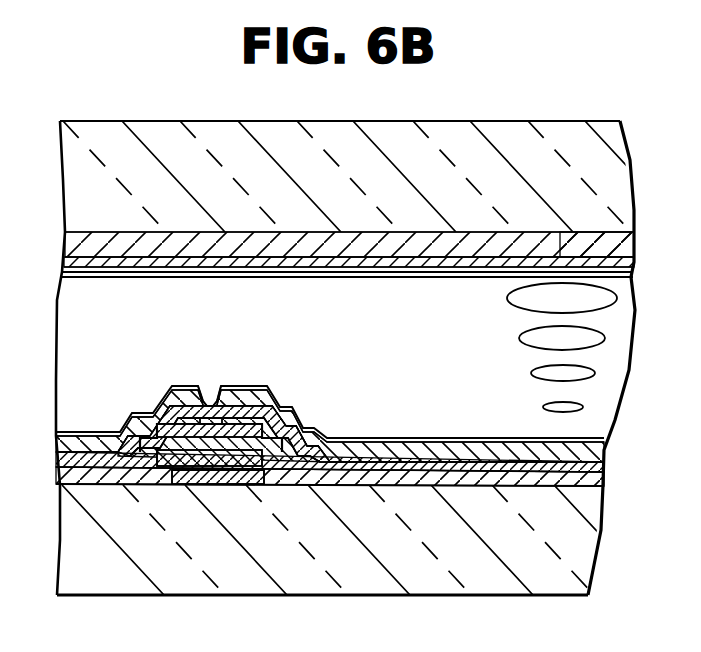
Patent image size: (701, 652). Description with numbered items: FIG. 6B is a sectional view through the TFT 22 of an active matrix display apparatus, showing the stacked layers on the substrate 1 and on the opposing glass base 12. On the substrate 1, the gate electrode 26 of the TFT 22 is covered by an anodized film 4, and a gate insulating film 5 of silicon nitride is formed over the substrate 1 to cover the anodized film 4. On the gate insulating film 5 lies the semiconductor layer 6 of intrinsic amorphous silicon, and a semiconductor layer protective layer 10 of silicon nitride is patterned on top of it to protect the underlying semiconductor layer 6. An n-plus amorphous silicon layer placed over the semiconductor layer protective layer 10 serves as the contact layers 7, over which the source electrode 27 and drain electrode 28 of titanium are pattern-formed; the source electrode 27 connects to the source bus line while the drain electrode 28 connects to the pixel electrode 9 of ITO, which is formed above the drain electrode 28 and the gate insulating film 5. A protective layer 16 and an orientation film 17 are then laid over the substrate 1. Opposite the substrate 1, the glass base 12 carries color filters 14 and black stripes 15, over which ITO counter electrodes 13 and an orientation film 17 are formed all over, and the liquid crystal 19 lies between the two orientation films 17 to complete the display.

The substrate 1 is at (187, 575).
The anodized film 4 is at (172, 487).
The gate insulating film 5 is at (352, 477).
The semiconductor layer 6 is at (226, 414).
The contact layers 7 is at (153, 412).
The pixel electrode 9 is at (440, 455).
The semiconductor layer protective layer 10 is at (203, 400).
The glass base 12 is at (72, 163).
The counter electrodes 13 is at (628, 264).
The color filters 14 is at (614, 243).
The black stripes 15 is at (77, 245).
The protective layer 16 is at (170, 398).
The orientation film 17 is at (397, 273).
The liquid crystal 19 is at (608, 362).
The TFT 22 is at (220, 350).
The gate electrode 26 is at (218, 488).
The source electrode 27 is at (116, 447).
The drain electrode 28 is at (304, 422).